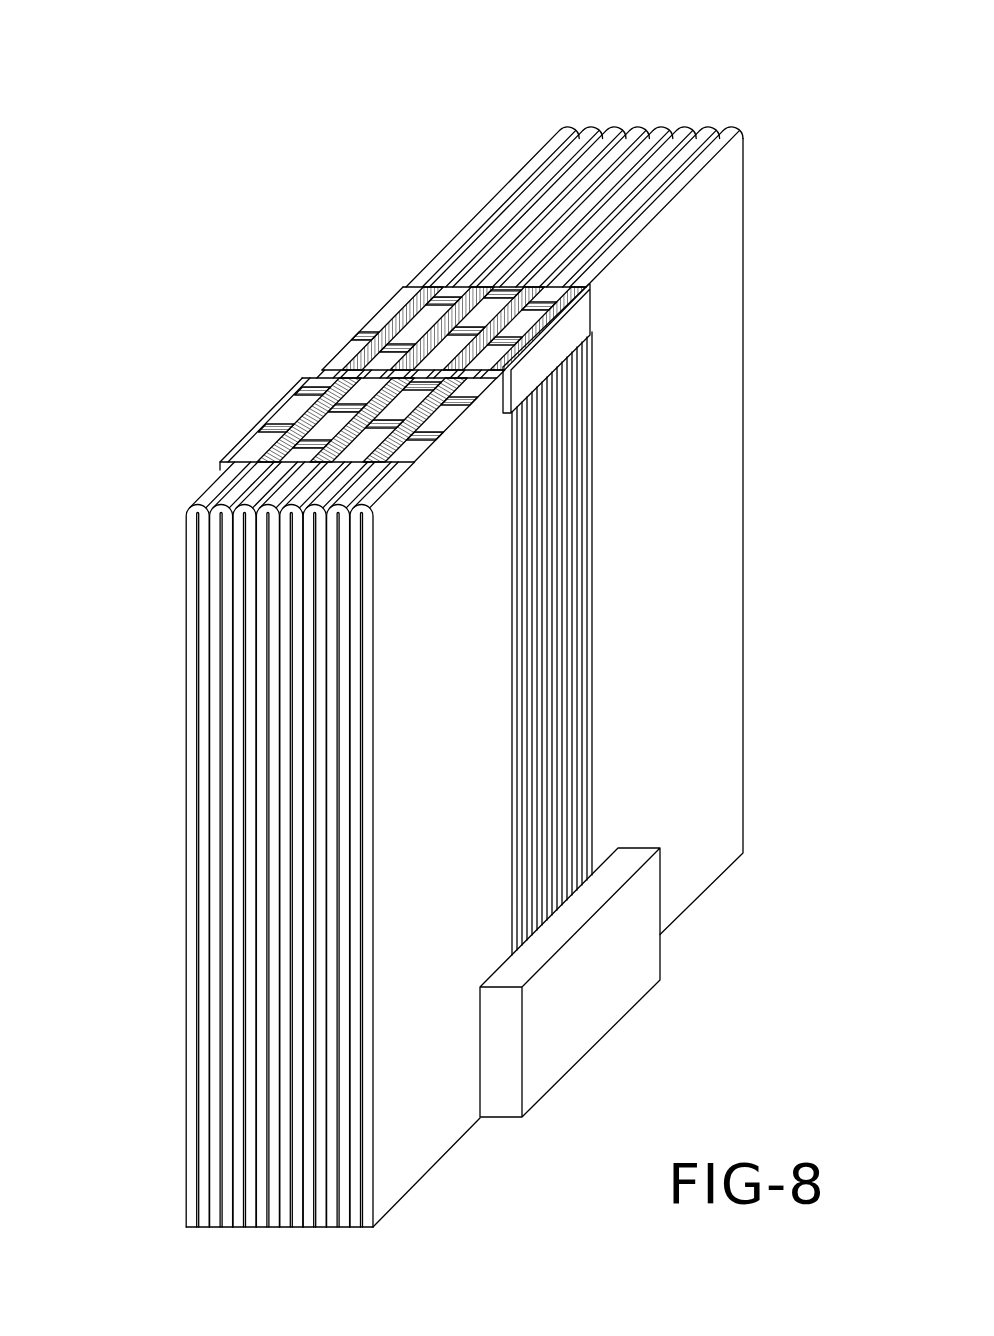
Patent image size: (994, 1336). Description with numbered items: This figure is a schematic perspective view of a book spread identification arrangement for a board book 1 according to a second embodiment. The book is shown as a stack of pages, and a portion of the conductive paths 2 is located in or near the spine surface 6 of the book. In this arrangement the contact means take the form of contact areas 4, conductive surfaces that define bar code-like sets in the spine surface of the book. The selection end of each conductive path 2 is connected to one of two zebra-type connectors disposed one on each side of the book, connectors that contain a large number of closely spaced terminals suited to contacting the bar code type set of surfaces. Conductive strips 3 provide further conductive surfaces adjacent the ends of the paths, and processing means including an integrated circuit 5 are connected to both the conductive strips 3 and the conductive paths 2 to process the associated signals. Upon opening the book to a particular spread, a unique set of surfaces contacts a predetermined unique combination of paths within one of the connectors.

The board book 1 is at (165, 863).
The conductive paths 2 is at (543, 777).
The conductive strips 3 is at (243, 442).
The contact areas 4 is at (470, 305).
The integrated circuit 5 is at (622, 977).
The spine surface 6 is at (640, 126).